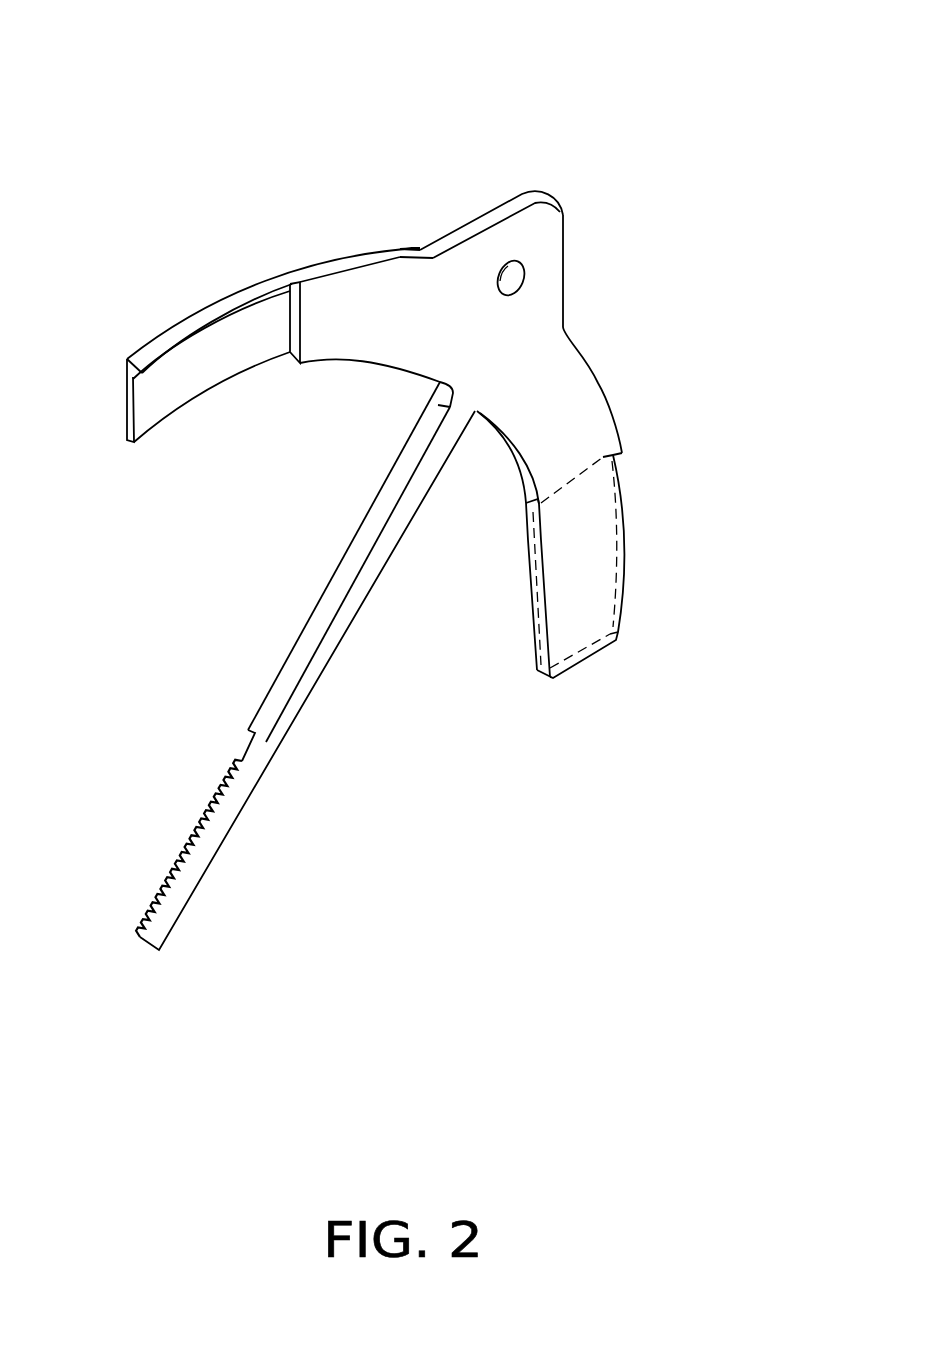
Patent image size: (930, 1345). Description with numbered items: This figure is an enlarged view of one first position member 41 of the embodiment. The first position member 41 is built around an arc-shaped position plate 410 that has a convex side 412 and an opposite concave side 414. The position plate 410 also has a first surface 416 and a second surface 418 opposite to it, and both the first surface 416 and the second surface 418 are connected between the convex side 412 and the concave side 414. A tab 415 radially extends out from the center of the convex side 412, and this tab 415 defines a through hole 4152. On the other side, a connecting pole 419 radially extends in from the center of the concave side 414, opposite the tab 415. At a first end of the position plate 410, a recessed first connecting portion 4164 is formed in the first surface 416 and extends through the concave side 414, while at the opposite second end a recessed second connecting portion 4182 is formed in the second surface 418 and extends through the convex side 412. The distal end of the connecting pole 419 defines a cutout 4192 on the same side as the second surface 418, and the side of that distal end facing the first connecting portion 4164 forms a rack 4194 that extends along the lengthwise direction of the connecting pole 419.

The first position member 41 is at (193, 52).
The position plate 410 is at (581, 418).
The convex side 412 is at (357, 253).
The concave side 414 is at (513, 462).
The tab 415 is at (542, 233).
The through hole 4152 is at (514, 278).
The first surface 416 is at (413, 292).
The first connecting portion 4164 is at (190, 377).
The second surface 418 is at (527, 636).
The second connecting portion 4182 is at (593, 568).
The connecting pole 419 is at (347, 580).
The cutout 4192 is at (250, 737).
The rack 4194 is at (218, 800).